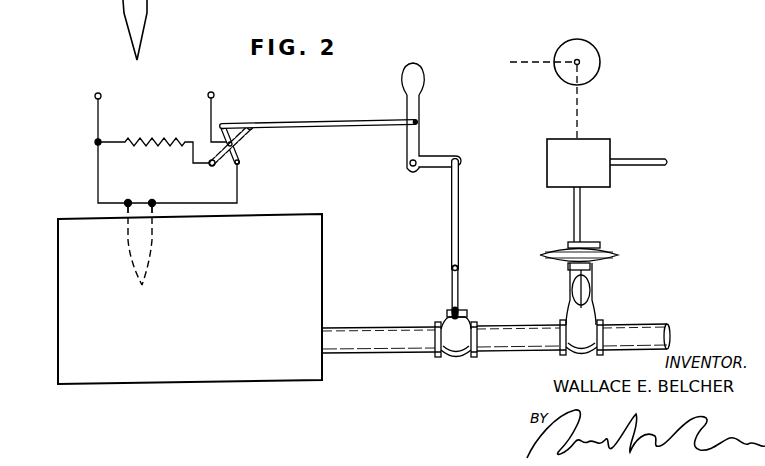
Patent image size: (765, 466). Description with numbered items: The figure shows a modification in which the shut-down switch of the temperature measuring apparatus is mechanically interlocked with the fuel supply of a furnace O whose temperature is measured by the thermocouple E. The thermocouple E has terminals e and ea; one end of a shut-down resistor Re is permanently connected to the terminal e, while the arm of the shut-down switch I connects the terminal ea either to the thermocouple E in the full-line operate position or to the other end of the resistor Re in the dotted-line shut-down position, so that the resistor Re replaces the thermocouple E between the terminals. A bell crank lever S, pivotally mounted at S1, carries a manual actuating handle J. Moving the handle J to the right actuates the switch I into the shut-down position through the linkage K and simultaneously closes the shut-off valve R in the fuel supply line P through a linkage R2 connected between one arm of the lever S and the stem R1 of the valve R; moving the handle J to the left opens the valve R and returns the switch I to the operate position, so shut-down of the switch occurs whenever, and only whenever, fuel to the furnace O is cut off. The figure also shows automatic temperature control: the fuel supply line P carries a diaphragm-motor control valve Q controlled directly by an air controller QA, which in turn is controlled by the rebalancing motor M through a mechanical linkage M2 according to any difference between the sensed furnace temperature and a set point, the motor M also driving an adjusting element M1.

The thermocouple E is at (130, 41).
The thermocouple terminal e is at (94, 96).
The thermocouple terminal ea is at (215, 94).
The shut-down resistor Re is at (160, 149).
The shut-down switch I is at (240, 152).
The linkage K is at (313, 122).
The manual actuating handle J is at (406, 77).
The bell crank lever S is at (408, 142).
The pivot S1 is at (408, 166).
The linkage R2 is at (452, 212).
The valve stem R1 is at (452, 287).
The shut-off valve R is at (460, 332).
The control valve Q is at (581, 332).
The fuel supply line P is at (642, 330).
The air controller QA is at (603, 204).
The motor M is at (572, 42).
The adjusting element M1 is at (532, 64).
The mechanical linkage M2 is at (580, 108).
The furnace O is at (197, 318).